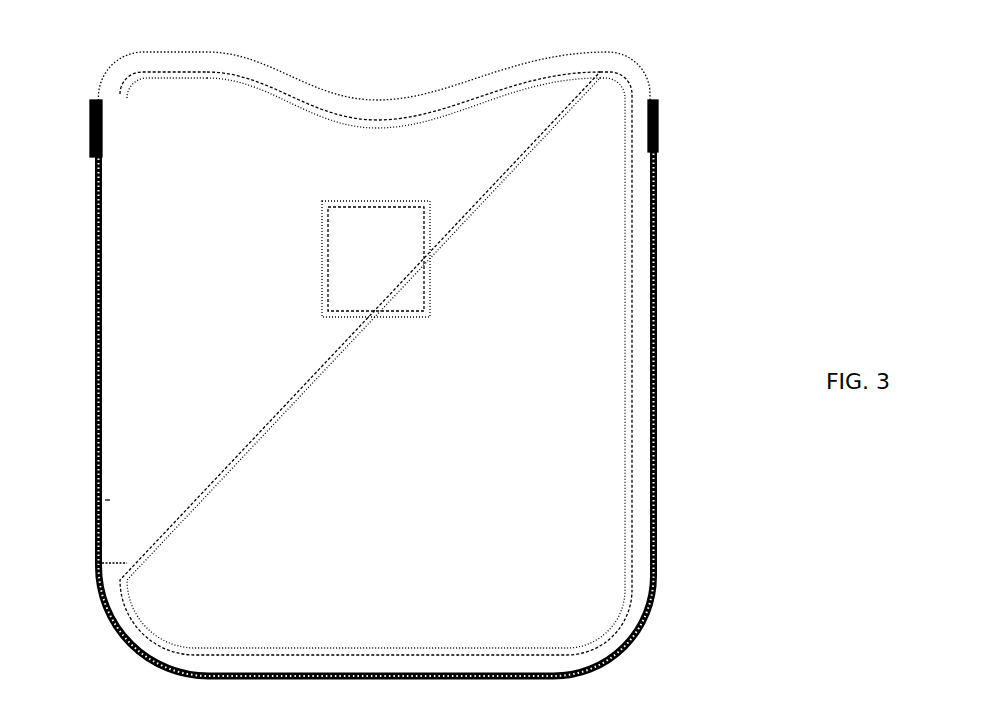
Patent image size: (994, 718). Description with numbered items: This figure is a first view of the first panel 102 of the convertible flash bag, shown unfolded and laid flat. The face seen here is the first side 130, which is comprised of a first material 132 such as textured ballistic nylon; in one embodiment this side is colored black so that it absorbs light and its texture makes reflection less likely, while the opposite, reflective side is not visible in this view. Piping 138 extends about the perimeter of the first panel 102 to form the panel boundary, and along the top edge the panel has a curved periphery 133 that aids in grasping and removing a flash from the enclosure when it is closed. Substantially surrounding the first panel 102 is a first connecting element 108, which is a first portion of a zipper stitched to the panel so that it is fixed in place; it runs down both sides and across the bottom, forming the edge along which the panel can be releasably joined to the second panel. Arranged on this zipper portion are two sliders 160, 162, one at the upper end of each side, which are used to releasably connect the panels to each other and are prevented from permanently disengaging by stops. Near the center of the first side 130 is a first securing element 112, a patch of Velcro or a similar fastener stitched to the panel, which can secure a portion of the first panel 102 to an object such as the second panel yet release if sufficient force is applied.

The first panel 102 is at (745, 100).
The first connecting element 108 is at (655, 447).
The first securing element 112 is at (380, 248).
The first side 130 is at (523, 263).
The first material 132 is at (577, 379).
The curved periphery 133 is at (327, 107).
The piping 138 is at (473, 78).
The slider 160 is at (92, 103).
The slider 162 is at (660, 125).